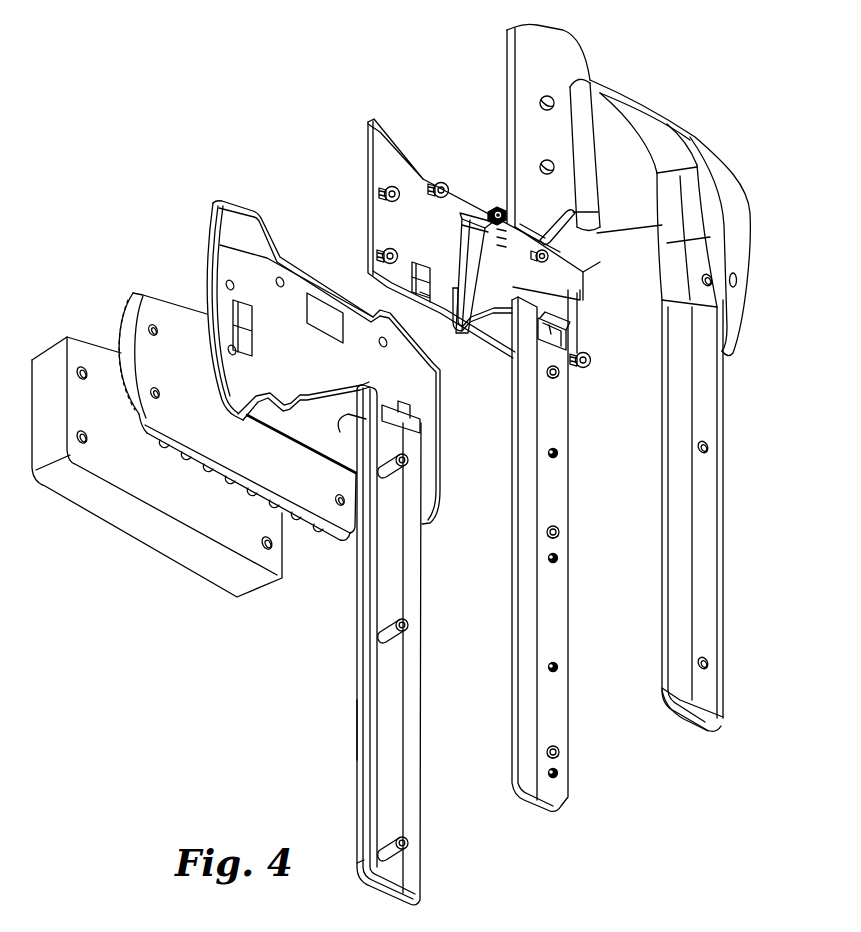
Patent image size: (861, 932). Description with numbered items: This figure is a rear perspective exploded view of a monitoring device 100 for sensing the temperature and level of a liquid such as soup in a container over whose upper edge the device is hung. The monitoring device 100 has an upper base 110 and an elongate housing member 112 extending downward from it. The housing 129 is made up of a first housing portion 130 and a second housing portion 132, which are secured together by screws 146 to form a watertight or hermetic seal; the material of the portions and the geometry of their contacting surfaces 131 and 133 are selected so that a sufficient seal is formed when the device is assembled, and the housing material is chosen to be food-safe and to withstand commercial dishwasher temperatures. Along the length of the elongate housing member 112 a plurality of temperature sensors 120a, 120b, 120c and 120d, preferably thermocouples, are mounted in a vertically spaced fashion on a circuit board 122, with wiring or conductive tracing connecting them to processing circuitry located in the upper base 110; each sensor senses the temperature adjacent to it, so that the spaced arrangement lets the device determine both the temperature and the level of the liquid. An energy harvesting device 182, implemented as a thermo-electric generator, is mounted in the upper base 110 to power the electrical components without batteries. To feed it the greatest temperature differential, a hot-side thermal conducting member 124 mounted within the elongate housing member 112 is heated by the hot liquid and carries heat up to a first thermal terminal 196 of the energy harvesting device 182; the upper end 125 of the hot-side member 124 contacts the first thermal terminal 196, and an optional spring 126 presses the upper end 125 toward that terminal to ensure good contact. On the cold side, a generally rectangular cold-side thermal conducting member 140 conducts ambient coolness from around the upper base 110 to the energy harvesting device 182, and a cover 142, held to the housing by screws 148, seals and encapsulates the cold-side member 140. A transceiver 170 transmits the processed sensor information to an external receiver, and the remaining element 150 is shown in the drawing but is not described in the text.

The brake assembly 100 is at (246, 104).
The handle 110 is at (748, 195).
The rail 112 is at (724, 481).
The nut 120a is at (560, 775).
The nut 120b is at (559, 666).
The nut 120c is at (559, 557).
The nut 120d is at (559, 452).
The rail 122 is at (570, 584).
The rail 124 is at (512, 622).
The wire bracket 125 is at (460, 332).
The screw 126 is at (494, 209).
The rotation direction 129 is at (340, 811).
The handle assembly 130 is at (724, 508).
The rail end 131 is at (660, 667).
The rail end 132 is at (357, 718).
The peg 133 is at (421, 826).
The backing frame 140 is at (318, 536).
The pad 142 is at (150, 548).
The washer 146 is at (556, 376).
The nut 148 is at (384, 192).
The mounting plate 150 is at (563, 277).
The plate 170 is at (400, 130).
The bracket 182 is at (472, 213).
The clip 196 is at (467, 226).